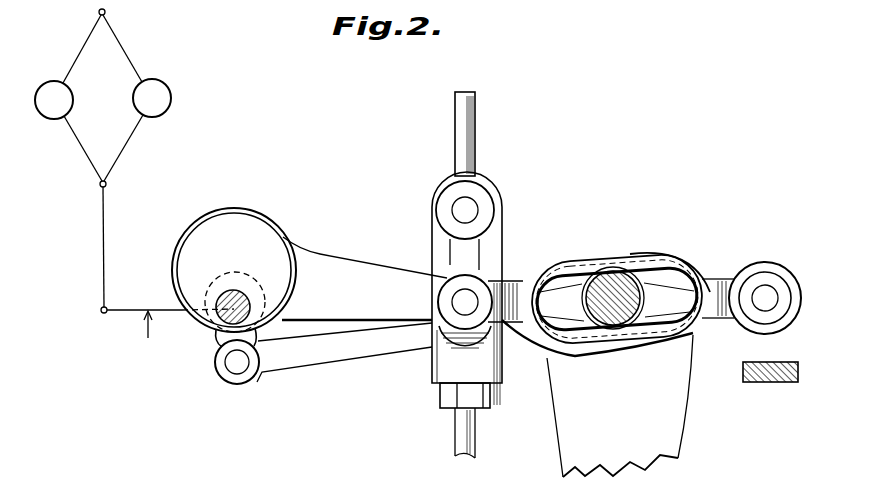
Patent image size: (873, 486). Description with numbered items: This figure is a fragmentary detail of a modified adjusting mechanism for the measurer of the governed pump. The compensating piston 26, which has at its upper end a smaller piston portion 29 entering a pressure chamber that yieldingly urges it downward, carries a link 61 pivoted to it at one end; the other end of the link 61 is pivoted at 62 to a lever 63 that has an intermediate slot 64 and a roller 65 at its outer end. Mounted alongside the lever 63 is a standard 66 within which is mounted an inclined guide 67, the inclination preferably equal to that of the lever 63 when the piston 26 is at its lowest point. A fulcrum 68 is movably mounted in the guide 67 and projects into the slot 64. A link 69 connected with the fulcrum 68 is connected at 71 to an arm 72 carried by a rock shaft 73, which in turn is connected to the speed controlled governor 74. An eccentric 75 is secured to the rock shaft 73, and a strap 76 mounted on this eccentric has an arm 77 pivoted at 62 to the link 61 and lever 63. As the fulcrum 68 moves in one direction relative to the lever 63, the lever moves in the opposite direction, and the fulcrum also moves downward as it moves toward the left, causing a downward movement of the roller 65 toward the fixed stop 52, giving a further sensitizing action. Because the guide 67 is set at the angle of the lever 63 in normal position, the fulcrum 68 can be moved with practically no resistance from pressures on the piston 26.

The compensating piston 26 is at (432, 441).
The smaller piston portion 29 is at (489, 132).
The fixed stop 52 is at (767, 397).
The link 61 is at (496, 290).
The pivot 62 is at (448, 302).
The lever 63 is at (616, 272).
The slot 64 is at (616, 263).
The roller 65 is at (765, 279).
The standard 66 is at (614, 340).
The guide 67 is at (722, 271).
The fulcrum 68 is at (613, 335).
The link 69 is at (344, 359).
The connection 71 is at (234, 380).
The arm 72 is at (211, 355).
The rock shaft 73 is at (194, 335).
The speed controlled governor 74 is at (134, 173).
The eccentric 75 is at (258, 265).
The strap 76 is at (238, 255).
The arm 77 is at (364, 265).